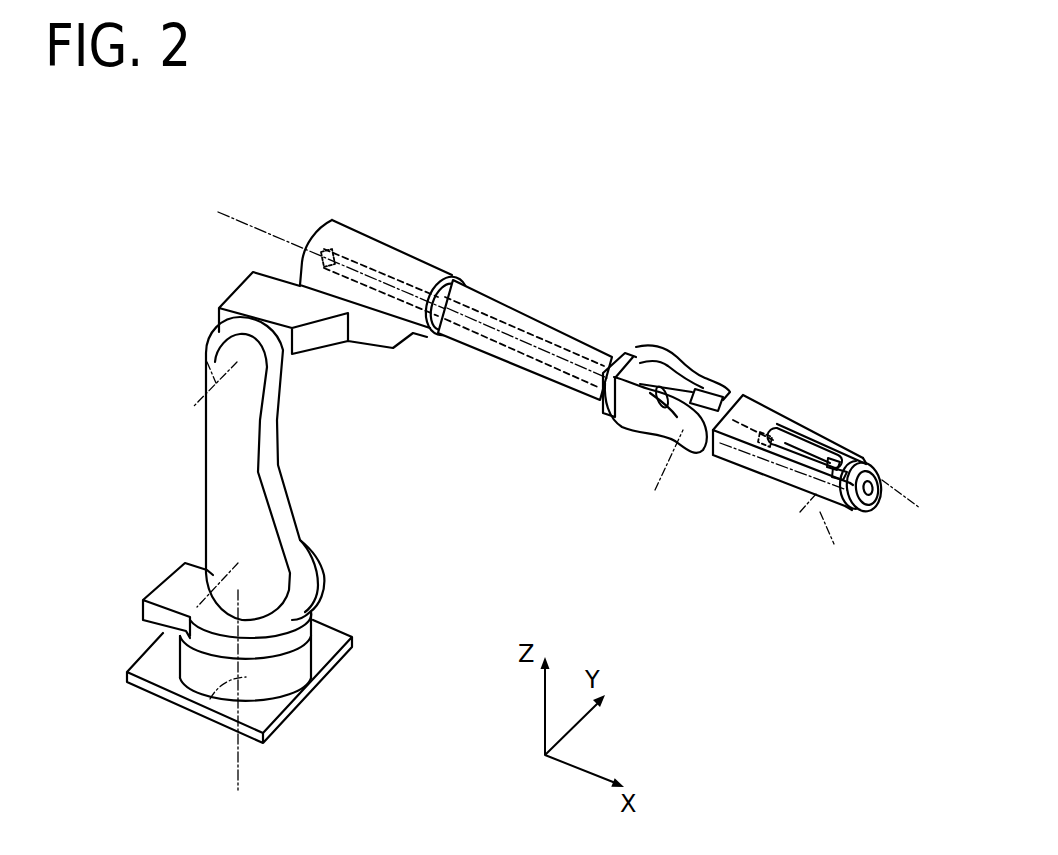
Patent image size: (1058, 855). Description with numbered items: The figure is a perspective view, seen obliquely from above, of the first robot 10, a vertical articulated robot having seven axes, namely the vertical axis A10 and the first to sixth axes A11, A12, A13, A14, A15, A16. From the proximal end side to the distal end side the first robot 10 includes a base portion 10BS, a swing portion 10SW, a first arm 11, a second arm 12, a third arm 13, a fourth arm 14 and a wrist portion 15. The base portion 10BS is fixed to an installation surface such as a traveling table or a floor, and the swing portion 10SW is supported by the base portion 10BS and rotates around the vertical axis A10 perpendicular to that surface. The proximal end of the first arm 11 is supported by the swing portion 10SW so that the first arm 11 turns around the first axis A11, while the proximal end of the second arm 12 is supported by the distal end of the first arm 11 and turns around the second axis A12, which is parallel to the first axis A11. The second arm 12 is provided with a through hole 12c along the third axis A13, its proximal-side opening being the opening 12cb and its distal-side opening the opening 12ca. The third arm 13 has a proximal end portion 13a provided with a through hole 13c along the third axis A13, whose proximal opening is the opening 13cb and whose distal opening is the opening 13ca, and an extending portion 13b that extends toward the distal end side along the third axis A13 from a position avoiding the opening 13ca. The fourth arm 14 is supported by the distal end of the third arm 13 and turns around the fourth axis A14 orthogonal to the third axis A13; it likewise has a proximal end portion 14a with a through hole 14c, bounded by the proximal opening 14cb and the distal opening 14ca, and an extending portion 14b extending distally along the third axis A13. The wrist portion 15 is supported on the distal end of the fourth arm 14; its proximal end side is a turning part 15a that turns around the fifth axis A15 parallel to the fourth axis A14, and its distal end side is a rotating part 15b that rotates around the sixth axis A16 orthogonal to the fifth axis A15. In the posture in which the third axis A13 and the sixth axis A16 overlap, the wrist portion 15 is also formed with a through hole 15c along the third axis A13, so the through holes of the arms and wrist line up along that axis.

The first robot 10 is at (190, 238).
The base portion 10BS is at (288, 669).
The swing portion 10SW is at (177, 588).
The vertical axis A10 is at (212, 698).
The first arm 11 is at (215, 428).
The first axis A11 is at (210, 556).
The second axis A12 is at (212, 378).
The second arm 12 is at (358, 228).
The opening 12cb is at (325, 253).
The through hole 12c is at (378, 268).
The opening 12ca is at (445, 307).
The third axis A13 is at (436, 298).
The opening 13cb is at (433, 338).
The third arm 13 is at (663, 267).
The proximal end portion 13a is at (500, 316).
The extending portion 13b is at (692, 383).
The through hole 13c is at (530, 332).
The opening 13ca is at (658, 400).
The fourth axis A14 is at (655, 473).
The fourth arm 14 is at (763, 553).
The proximal end portion 14a is at (740, 455).
The extending portion 14b is at (782, 469).
The through hole 14c is at (772, 421).
The opening 14ca is at (768, 438).
The opening 14cb is at (727, 402).
The wrist portion 15 is at (934, 410).
The turning part 15a is at (843, 460).
The rotating part 15b is at (875, 458).
The through hole 15c is at (868, 512).
The fifth axis A15 is at (824, 531).
The sixth axis A16 is at (895, 486).